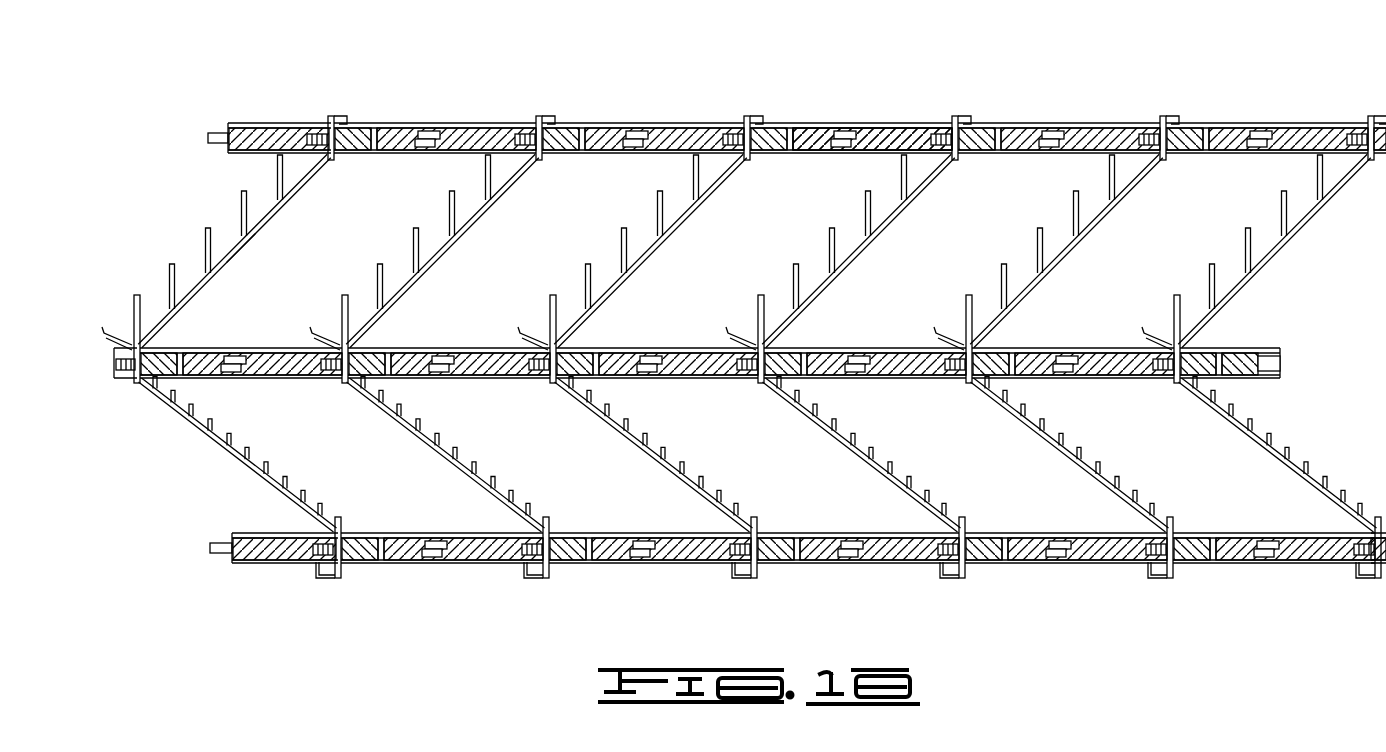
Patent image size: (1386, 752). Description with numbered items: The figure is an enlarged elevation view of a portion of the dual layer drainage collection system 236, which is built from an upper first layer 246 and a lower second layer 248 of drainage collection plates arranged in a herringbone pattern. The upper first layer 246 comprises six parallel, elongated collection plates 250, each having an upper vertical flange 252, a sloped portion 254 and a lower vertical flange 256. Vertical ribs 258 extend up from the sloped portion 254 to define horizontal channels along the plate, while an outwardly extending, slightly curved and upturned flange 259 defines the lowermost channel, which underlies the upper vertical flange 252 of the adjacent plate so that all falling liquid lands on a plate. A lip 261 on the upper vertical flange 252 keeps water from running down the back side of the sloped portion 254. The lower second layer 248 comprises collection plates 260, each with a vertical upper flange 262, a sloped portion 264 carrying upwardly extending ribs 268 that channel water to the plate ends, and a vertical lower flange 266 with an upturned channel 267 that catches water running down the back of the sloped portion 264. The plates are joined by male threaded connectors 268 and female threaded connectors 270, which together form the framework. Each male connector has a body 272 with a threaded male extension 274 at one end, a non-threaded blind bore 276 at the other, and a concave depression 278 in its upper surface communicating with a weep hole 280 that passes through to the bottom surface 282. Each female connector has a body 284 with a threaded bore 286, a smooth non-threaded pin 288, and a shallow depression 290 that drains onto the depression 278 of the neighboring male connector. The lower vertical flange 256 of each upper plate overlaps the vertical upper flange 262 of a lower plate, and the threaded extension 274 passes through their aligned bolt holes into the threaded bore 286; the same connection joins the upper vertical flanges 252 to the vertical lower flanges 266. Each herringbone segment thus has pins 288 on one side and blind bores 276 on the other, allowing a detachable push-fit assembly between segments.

The drainage collection system 236 is at (966, 58).
The upper first layer 246 is at (146, 234).
The lower second layer 248 is at (142, 458).
The collection plate 250 is at (310, 170).
The upper vertical flange 252 is at (322, 118).
The sloped portion 254 is at (230, 255).
The lower vertical flange 256 is at (120, 350).
The vertical ribs 258 is at (242, 212).
The outwardly extending flange 259 is at (106, 334).
The collection plate 260 is at (445, 452).
The lip 261 is at (352, 118).
The vertical upper flange 262 is at (118, 372).
The sloped portion 264 is at (272, 478).
The vertical lower flange 266 is at (342, 566).
The upturned channel 267 is at (318, 572).
The male threaded connector 268 is at (612, 128).
The female threaded connector 270 is at (470, 124).
The body 272 is at (815, 126).
The threaded male extension 274 is at (728, 124).
The non-threaded blind bore 276 is at (858, 126).
The concave depression 278 is at (778, 126).
The weep hole 280 is at (788, 152).
The bottom surface 282 is at (817, 152).
The body 284 is at (1082, 138).
The threaded bore 286 is at (1148, 130).
The non-threaded pin 288 is at (1050, 126).
The shallow depression 290 is at (1093, 132).